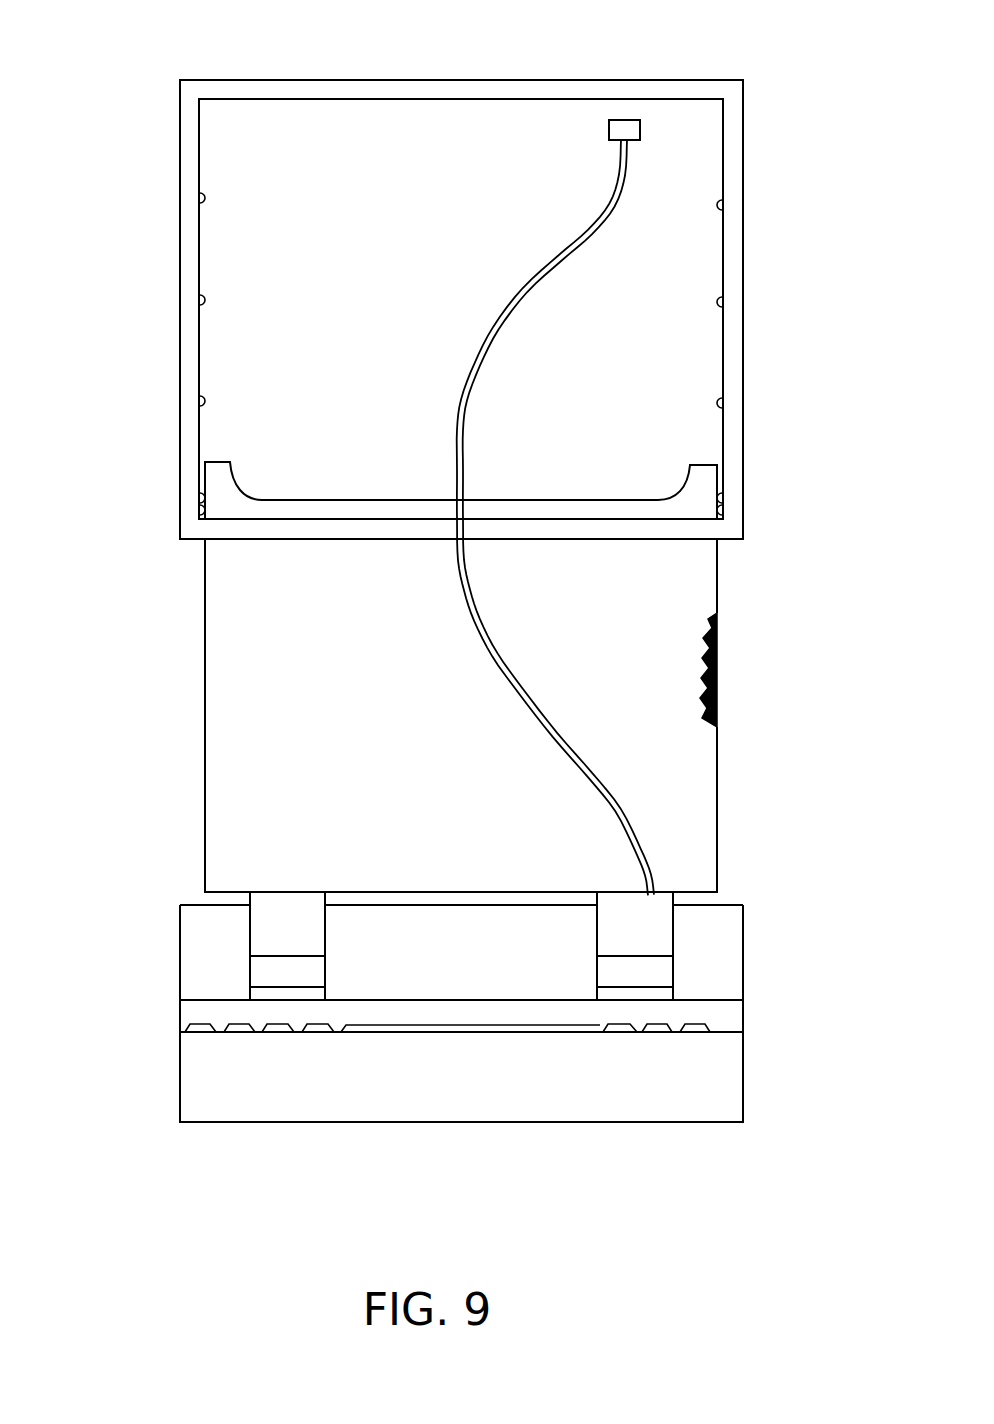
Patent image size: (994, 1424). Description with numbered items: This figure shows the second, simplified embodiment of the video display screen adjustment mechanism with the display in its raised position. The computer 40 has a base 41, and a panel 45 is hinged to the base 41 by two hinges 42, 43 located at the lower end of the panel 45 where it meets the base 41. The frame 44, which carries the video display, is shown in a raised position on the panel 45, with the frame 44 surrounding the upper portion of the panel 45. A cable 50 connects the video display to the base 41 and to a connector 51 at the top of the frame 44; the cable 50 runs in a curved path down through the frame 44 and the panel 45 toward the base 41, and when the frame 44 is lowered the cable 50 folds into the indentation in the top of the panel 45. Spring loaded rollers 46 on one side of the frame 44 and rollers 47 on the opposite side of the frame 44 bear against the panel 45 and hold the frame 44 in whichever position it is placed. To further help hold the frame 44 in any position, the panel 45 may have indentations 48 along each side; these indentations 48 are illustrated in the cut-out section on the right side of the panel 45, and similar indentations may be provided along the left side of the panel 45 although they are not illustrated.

The computer 40 is at (640, 1228).
The base 41 is at (745, 1052).
The hinge 42 is at (275, 923).
The hinge 43 is at (628, 932).
The frame 44 is at (745, 140).
The panel 45 is at (250, 638).
The spring loaded rollers 46 is at (727, 207).
The rollers 47 is at (198, 199).
The indentations 48 is at (713, 685).
The cable 50 is at (615, 797).
The connector 51 is at (627, 134).